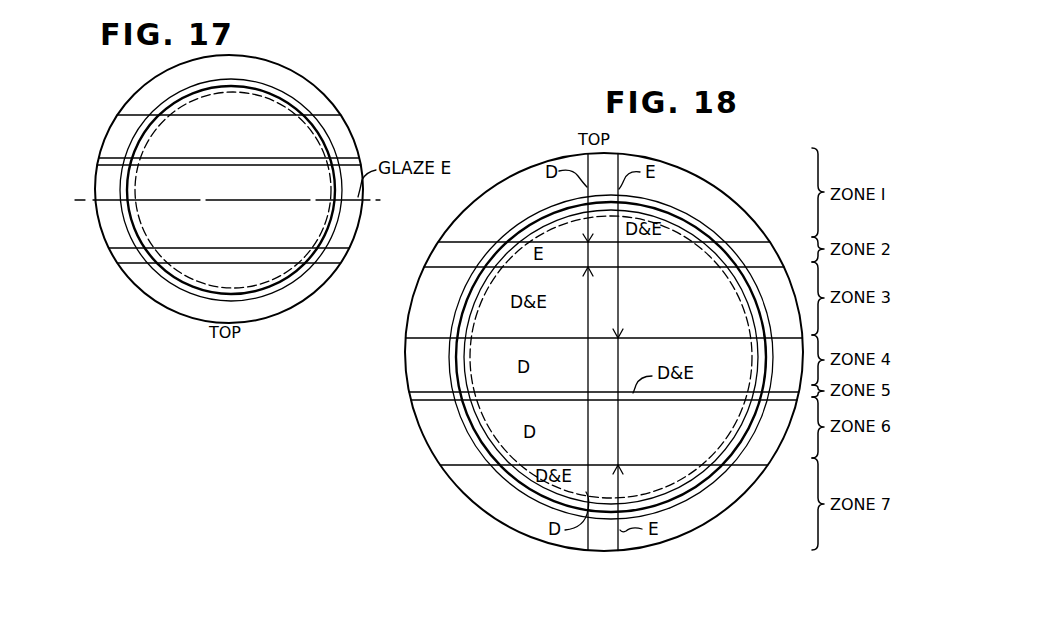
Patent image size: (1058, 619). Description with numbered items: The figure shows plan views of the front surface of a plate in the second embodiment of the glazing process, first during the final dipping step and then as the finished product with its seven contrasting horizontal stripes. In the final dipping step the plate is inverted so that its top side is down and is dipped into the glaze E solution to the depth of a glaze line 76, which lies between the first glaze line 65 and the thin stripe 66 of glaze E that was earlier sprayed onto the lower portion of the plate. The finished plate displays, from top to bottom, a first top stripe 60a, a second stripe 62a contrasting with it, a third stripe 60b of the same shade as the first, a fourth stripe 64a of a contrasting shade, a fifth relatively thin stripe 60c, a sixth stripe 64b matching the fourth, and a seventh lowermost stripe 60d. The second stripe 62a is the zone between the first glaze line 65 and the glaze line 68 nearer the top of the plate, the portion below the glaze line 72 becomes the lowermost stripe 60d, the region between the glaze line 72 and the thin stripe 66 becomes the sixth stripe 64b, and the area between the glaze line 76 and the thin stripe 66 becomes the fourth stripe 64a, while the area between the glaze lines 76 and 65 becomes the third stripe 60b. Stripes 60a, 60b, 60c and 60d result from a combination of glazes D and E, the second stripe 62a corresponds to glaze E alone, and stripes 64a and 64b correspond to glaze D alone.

In FIG. 17, the first glaze line 65 is at (300, 247).
In FIG. 18, the first glaze line 65 is at (444, 268).
In FIG. 17, the thin stripe of glaze E 66 is at (305, 157).
In FIG. 18, the thin stripe of glaze E 66 is at (543, 393).
In FIG. 17, the glaze line 68 is at (283, 263).
In FIG. 18, the glaze line 68 is at (467, 242).
In FIG. 17, the glaze line 72 is at (270, 114).
In FIG. 18, the glaze line 72 is at (462, 466).
In FIG. 17, the glaze line 76 is at (110, 200).
In FIG. 18, the glaze line 76 is at (423, 345).
In FIG. 18, the first top stripe 60a is at (715, 215).
In FIG. 18, the third stripe 60b is at (685, 305).
In FIG. 18, the fifth relatively thin stripe 60c is at (715, 393).
In FIG. 18, the seventh lowermost stripe 60d is at (672, 485).
In FIG. 18, the second stripe 62a is at (688, 263).
In FIG. 18, the fourth stripe 64a is at (691, 359).
In FIG. 18, the sixth stripe 64b is at (651, 429).